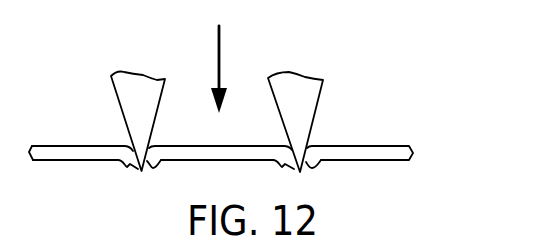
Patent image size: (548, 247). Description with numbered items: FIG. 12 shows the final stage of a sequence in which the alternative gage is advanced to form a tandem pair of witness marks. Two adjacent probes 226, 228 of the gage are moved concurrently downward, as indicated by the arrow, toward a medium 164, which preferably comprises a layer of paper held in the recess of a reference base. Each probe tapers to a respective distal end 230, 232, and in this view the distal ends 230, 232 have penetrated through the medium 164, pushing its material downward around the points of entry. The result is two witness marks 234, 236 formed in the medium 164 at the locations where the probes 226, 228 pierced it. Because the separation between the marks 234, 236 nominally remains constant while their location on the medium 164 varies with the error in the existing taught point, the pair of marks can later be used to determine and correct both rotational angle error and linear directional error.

The medium 164 is at (396, 147).
The probe 226 is at (135, 85).
The probe 228 is at (302, 85).
The distal end 230 is at (141, 172).
The distal end 232 is at (300, 172).
The witness mark 234 is at (112, 135).
The witness mark 236 is at (324, 132).